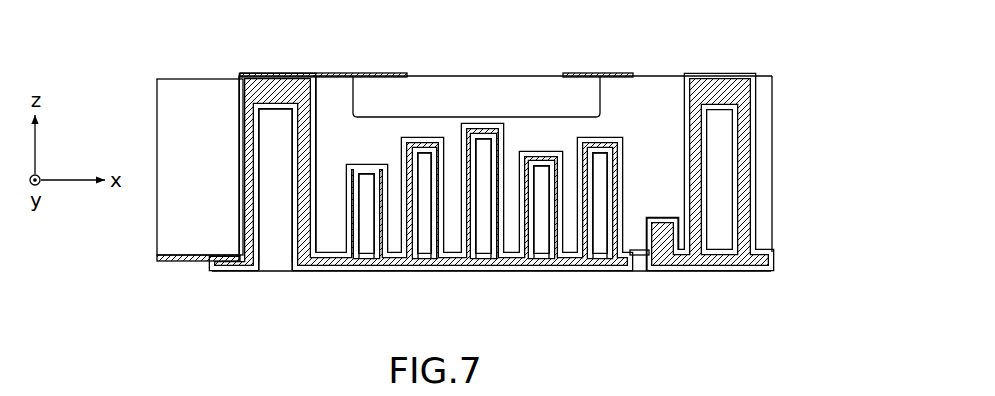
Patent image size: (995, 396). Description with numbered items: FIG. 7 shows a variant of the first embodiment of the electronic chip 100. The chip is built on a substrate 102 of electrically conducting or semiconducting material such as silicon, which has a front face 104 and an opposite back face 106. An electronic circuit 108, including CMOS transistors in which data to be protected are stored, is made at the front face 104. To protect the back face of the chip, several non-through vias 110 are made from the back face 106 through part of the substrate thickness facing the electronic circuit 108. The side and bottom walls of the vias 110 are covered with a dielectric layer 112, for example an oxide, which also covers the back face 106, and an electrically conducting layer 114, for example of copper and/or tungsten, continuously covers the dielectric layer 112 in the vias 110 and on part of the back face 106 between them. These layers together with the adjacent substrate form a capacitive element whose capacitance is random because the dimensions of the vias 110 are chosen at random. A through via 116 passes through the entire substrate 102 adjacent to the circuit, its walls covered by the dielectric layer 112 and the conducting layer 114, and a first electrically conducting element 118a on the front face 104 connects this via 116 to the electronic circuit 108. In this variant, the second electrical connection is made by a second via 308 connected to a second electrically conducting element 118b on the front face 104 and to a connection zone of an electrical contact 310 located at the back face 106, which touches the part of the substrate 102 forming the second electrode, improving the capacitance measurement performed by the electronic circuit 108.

The electronic chip 100 is at (752, 57).
The substrate 102 is at (178, 93).
The front face 104 is at (653, 76).
The back face 106 is at (183, 257).
The electronic circuit 108 is at (527, 107).
The non-through vias 110 is at (367, 257).
The dielectric layer 112 is at (640, 256).
The electrically conducting layer 114 is at (315, 270).
The through via 116 is at (273, 257).
The first electrically conducting element 118a is at (343, 76).
The second electrically conducting element 118b is at (600, 75).
The second via 308 is at (720, 167).
The electrical contact 310 is at (663, 268).